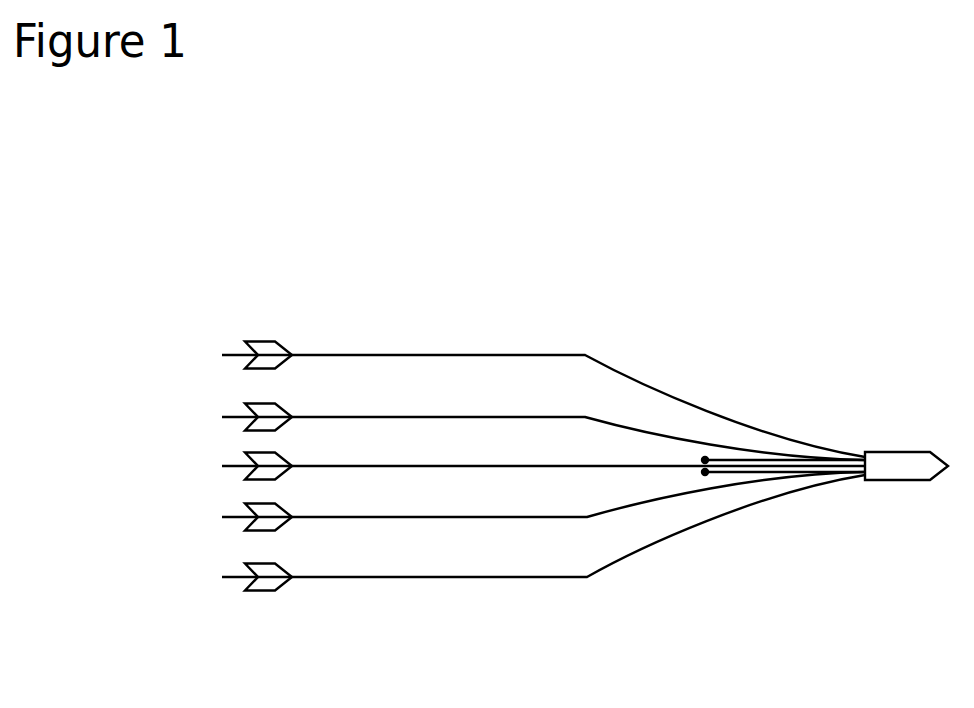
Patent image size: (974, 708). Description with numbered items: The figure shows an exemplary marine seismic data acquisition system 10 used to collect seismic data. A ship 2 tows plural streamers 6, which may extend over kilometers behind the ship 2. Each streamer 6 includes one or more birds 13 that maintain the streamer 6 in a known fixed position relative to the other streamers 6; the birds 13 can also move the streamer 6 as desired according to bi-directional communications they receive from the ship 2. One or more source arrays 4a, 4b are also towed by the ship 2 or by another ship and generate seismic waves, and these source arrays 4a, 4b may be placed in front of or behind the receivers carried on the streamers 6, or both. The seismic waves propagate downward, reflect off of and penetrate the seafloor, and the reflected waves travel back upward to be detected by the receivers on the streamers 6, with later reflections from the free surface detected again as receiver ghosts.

The data acquisition system 10 is at (397, 258).
The bird 13 is at (279, 343).
The streamer 6 is at (360, 355).
The source array 4a is at (705, 459).
The source array 4b is at (705, 473).
The ship 2 is at (903, 451).